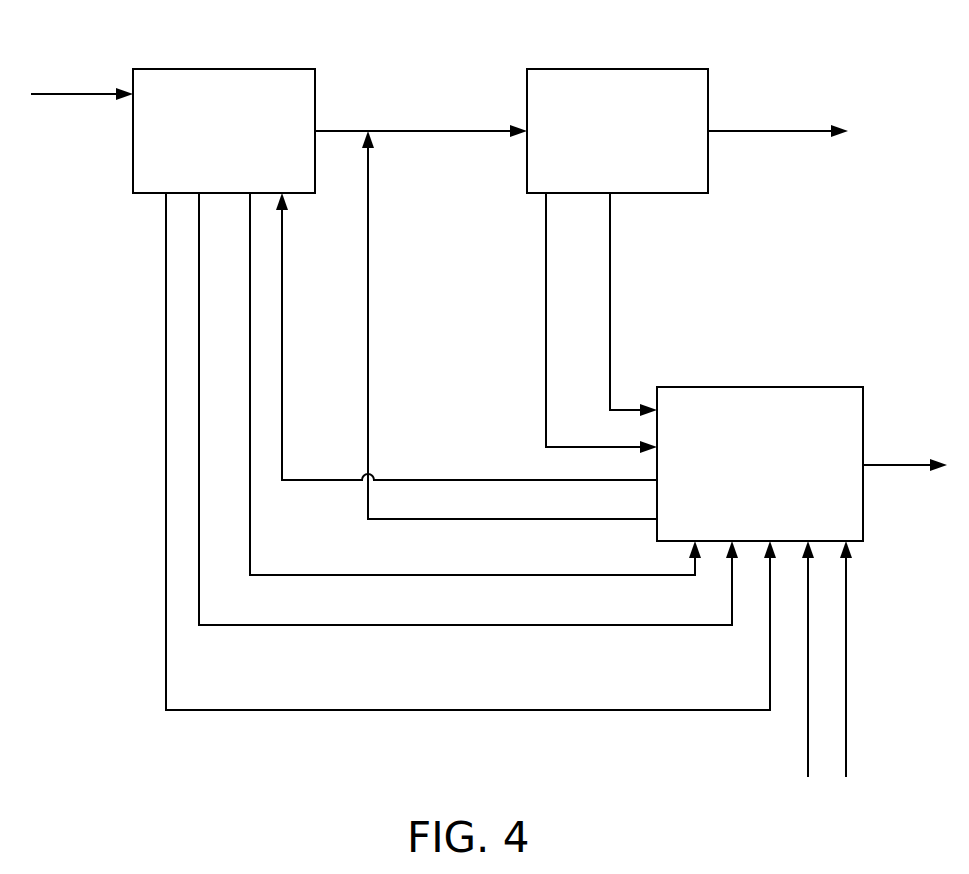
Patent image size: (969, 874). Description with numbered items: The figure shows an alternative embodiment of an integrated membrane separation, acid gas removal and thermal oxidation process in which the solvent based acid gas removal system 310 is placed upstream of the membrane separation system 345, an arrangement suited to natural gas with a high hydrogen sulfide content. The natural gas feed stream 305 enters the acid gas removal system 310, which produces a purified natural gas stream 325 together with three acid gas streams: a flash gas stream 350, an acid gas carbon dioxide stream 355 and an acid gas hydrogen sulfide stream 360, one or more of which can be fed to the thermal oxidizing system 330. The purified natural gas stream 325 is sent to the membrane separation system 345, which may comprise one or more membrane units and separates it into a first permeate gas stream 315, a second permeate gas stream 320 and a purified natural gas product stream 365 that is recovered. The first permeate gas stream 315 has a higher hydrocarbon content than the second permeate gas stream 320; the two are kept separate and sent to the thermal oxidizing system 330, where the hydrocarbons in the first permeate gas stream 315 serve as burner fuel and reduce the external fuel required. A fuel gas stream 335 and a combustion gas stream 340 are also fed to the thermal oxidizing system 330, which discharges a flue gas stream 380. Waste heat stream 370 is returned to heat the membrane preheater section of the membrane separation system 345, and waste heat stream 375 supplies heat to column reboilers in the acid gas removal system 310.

The natural gas feed stream 305 is at (67, 93).
The acid gas removal system 310 is at (226, 68).
The first permeate gas stream 315 is at (546, 286).
The second permeate gas stream 320 is at (611, 274).
The purified natural gas stream 325 is at (438, 130).
The thermal oxidizing system 330 is at (772, 386).
The fuel gas stream 335 is at (808, 740).
The combustion gas stream 340 is at (846, 740).
The membrane separation system 345 is at (618, 68).
The acid gas stream 350 is at (165, 356).
The acid gas stream 355 is at (333, 627).
The acid gas stream 360 is at (405, 578).
The purified natural gas product stream 365 is at (778, 130).
The waste heat stream 370 is at (530, 520).
The waste heat stream 375 is at (438, 478).
The flue gas stream 380 is at (908, 464).